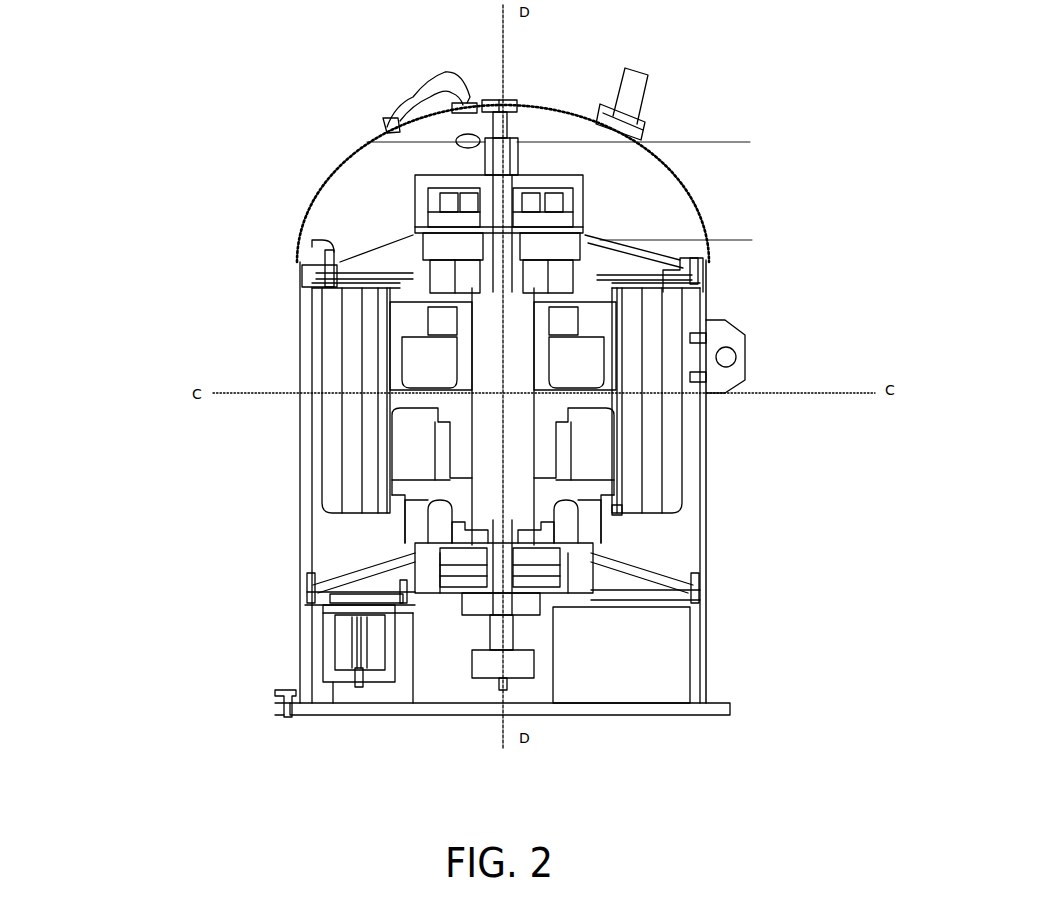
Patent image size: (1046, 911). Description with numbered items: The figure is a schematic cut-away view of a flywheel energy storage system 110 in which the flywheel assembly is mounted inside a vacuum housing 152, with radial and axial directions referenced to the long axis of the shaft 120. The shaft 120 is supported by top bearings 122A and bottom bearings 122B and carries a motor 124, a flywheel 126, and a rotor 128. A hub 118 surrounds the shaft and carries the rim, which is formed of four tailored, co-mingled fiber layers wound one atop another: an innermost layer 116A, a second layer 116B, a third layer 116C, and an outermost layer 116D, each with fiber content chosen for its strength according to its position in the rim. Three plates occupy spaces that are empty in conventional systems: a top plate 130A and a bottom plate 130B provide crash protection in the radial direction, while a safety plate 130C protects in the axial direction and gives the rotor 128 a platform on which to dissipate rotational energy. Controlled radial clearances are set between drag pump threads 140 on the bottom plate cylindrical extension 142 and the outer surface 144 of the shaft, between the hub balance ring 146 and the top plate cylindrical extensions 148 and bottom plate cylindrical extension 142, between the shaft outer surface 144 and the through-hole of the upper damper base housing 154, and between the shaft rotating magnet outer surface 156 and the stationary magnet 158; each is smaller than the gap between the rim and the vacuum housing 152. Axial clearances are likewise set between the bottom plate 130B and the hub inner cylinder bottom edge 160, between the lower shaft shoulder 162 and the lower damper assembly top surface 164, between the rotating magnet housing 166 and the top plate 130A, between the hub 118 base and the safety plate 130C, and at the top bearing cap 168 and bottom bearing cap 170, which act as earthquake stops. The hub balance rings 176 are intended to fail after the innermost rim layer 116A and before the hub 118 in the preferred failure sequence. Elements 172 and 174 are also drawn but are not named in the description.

The flywheel energy storage system 110 is at (225, 480).
The innermost rim layer 116A is at (370, 298).
The second rim layer 116B is at (355, 315).
The third rim layer 116C is at (342, 332).
The outermost rim layer 116D is at (323, 348).
The hub 118 is at (403, 387).
The shaft 120 is at (515, 368).
The top bearings 122A is at (498, 200).
The bottom bearings 122B is at (487, 568).
The motor 124 is at (455, 290).
The flywheel 126 is at (307, 285).
The rotor 128 is at (613, 377).
The top plate 130A is at (365, 237).
The bottom plate 130B is at (648, 566).
The safety plate 130C is at (337, 536).
The drag pump threads 140 is at (567, 450).
The bottom plate cylindrical extension 142 is at (595, 503).
The outer surface of the shaft 144 is at (388, 500).
The hub balance ring 146 is at (706, 270).
The top plate cylindrical extensions 148 is at (400, 273).
The vacuum housing 152 is at (717, 297).
The upper damper base housing 154 is at (580, 203).
The shaft rotating magnet outer surface 156 is at (573, 250).
The stationary magnet 158 is at (545, 250).
The hub inner cylinder bottom edge 160 is at (537, 481).
The lower shaft shoulder 162 is at (558, 478).
The lower damper assembly top surface 164 is at (582, 587).
The rotating magnet housing 166 is at (545, 268).
The top bearing cap 168 is at (520, 183).
The bottom bearing cap 170 is at (523, 587).
The bearing cap 172 is at (563, 177).
The lower bearing retainer 174 is at (582, 560).
The hub balance rings 176 is at (468, 465).